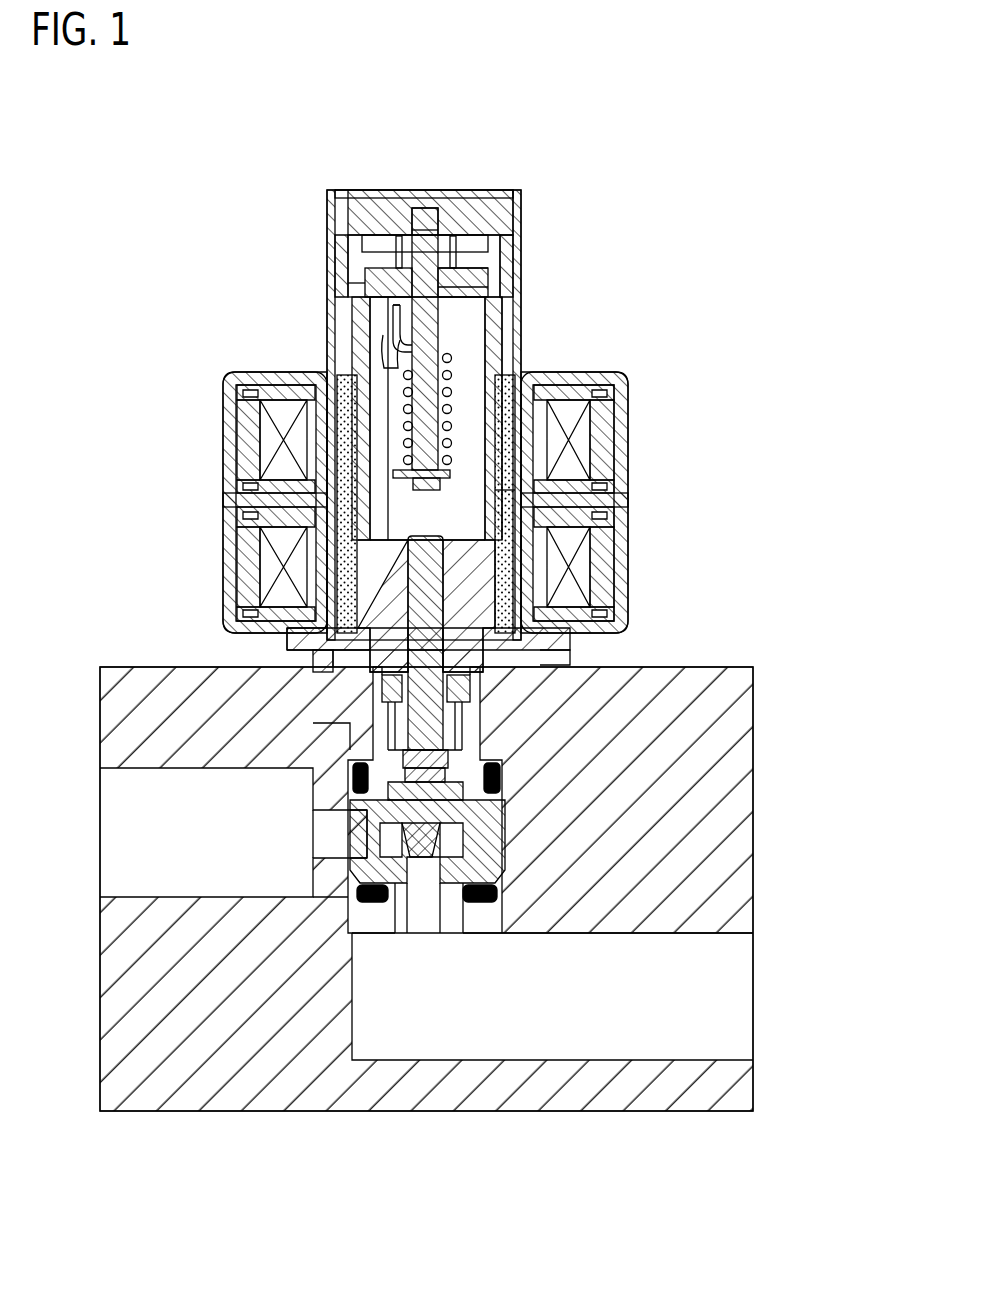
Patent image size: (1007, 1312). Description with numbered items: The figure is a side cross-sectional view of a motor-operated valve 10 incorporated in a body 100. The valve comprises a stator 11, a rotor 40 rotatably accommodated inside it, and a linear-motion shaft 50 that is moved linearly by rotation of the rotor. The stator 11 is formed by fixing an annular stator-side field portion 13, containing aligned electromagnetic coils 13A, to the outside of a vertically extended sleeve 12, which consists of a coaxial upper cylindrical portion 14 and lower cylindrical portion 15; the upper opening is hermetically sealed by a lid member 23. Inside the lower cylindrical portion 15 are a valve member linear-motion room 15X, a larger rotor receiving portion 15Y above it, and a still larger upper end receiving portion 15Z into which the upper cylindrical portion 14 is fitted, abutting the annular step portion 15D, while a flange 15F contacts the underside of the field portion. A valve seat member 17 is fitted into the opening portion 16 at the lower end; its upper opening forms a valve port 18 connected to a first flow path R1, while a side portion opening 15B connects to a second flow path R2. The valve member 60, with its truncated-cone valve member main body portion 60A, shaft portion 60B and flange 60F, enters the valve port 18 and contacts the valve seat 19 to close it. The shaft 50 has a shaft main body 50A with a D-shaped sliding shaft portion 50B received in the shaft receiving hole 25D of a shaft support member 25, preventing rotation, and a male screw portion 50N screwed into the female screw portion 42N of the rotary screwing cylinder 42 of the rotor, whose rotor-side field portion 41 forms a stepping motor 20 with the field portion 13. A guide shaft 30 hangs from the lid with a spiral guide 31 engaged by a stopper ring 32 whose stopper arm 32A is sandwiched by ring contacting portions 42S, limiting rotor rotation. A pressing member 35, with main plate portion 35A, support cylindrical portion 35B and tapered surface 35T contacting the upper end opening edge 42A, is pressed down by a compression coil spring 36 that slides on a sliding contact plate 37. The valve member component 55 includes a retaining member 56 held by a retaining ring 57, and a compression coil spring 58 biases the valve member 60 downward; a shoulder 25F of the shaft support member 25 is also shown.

The motor-operated valve 10 is at (612, 112).
The stator 11 is at (523, 210).
The sleeve 12 is at (505, 300).
The stator-side field portion 13 is at (600, 375).
The electromagnetic coils 13A is at (590, 415).
The upper cylindrical portion 14 is at (340, 265).
The lower cylindrical portion 15 is at (317, 692).
The side portion opening 15B is at (345, 862).
The annular step portion 15D is at (310, 586).
The flange 15F is at (330, 632).
The valve member linear-motion room 15X is at (345, 722).
The rotor receiving portion 15Y is at (310, 640).
The upper end receiving portion 15Z is at (300, 600).
The opening portion 16 is at (400, 910).
The valve seat member 17 is at (458, 910).
The valve port 18 is at (490, 880).
The valve seat 19 is at (328, 839).
The stepping motor 20 is at (599, 362).
The lid member 23 is at (369, 190).
The shaft support member 25 is at (506, 725).
The shaft receiving hole 25D is at (500, 703).
The shaft shoulder 25F is at (385, 660).
The guide shaft 30 is at (432, 208).
The spiral guide 31 is at (393, 292).
The stopper ring 32 is at (388, 318).
The stopper arm 32A is at (392, 393).
The pressing member 35 is at (482, 241).
The main plate portion 35A is at (482, 268).
The support cylindrical portion 35B is at (458, 240).
The tapered surface 35T is at (470, 287).
The compression coil spring 36 is at (395, 245).
The sliding contact plate 37 is at (447, 218).
The rotor 40 is at (512, 325).
The rotor-side field portion 41 is at (500, 345).
The rotary screwing cylinder 42 is at (393, 345).
The upper end opening edge 42A is at (360, 276).
The female screw portion 42N is at (500, 560).
The ring contacting portions 42S is at (385, 455).
The linear-motion shaft 50 is at (560, 641).
The shaft main body 50A is at (500, 492).
The sliding shaft portion 50B is at (545, 655).
The male screw portion 50N is at (510, 612).
The valve member component 55 is at (450, 740).
The retaining member 56 is at (432, 775).
The retaining ring 57 is at (455, 790).
The compression coil spring 58 is at (360, 762).
The valve member 60 is at (437, 845).
The valve member main body portion 60A is at (355, 875).
The shaft portion 60B is at (385, 800).
The flange 60F is at (420, 812).
The body 100 is at (200, 1100).
The first flow path R1 is at (430, 915).
The second flow path R2 is at (367, 817).